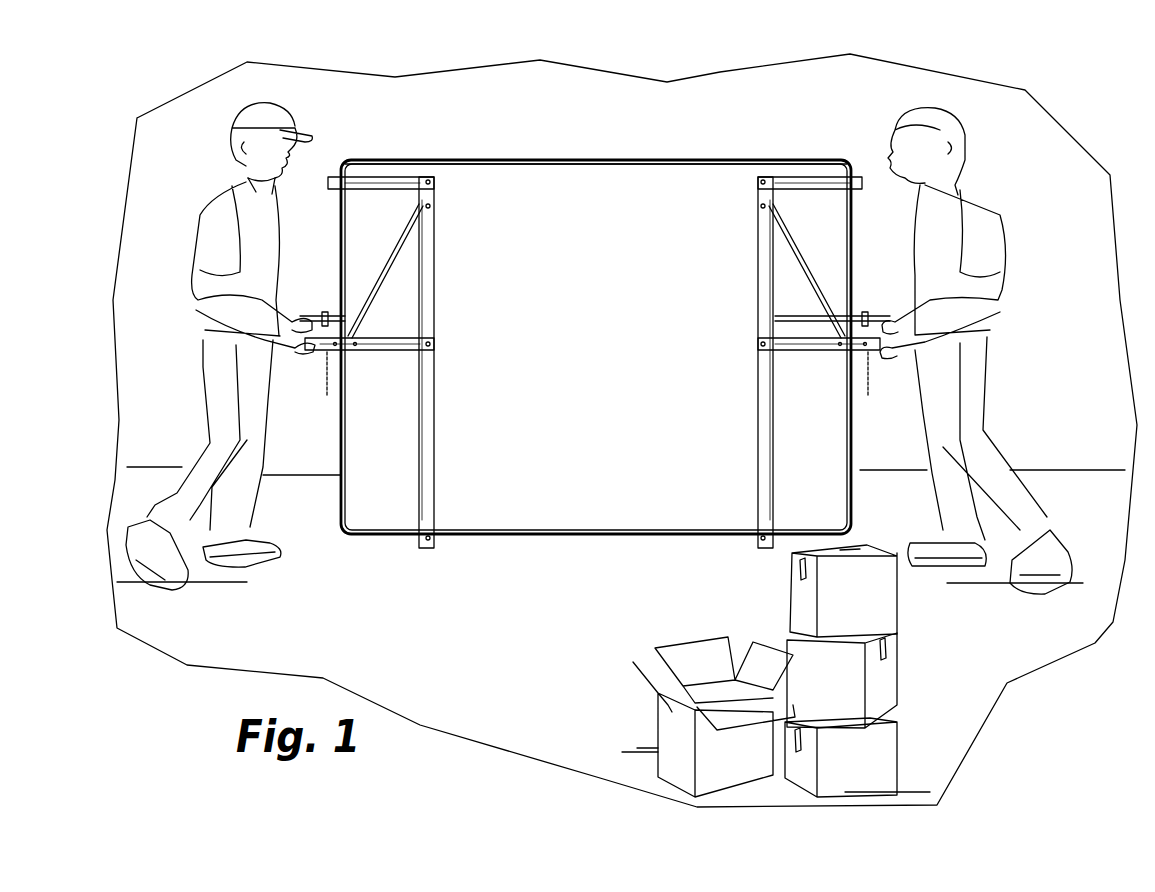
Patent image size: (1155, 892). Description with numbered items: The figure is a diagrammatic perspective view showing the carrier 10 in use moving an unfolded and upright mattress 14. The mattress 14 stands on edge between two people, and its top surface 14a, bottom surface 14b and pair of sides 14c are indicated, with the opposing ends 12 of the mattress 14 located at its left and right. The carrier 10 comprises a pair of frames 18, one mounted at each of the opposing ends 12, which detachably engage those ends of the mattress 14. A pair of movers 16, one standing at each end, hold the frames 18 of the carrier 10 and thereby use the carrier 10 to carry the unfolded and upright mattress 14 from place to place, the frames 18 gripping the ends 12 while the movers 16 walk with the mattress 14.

The carrier 10 is at (746, 545).
The pair of frames 18 is at (596, 362).
The opposing ends 12 is at (337, 252).
The unfolded and upright mattress 14 is at (488, 160).
The top surface 14a is at (600, 382).
The bottom surface 14b is at (618, 225).
The pair of sides 14c is at (765, 156).
The pair of movers 16 is at (243, 103).